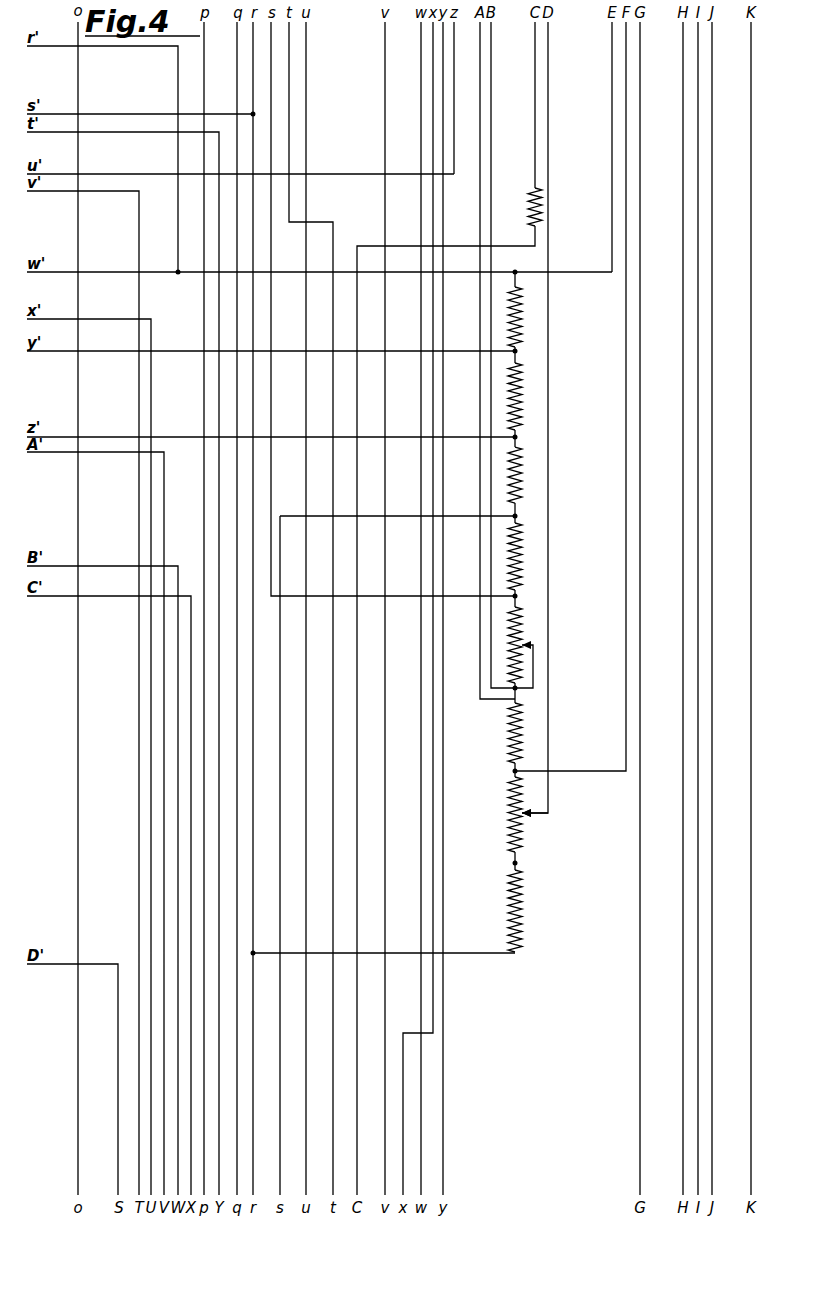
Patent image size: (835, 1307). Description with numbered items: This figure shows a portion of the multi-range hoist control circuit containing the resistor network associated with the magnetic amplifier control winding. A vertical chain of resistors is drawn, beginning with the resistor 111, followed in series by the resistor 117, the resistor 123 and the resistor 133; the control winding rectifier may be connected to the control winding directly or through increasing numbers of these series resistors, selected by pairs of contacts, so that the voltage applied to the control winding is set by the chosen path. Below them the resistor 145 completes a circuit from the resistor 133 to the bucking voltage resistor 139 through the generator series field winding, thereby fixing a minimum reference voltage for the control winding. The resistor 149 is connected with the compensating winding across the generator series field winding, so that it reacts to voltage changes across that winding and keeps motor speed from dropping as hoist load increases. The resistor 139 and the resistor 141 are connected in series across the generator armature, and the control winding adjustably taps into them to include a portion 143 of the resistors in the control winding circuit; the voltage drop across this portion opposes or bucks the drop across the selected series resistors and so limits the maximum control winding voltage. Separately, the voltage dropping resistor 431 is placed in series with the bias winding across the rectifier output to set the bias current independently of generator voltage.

The voltage dropping resistor 431 is at (529, 207).
The resistor 111 is at (519, 317).
The resistor 117 is at (520, 392).
The resistor 123 is at (520, 477).
The resistor 133 is at (520, 568).
The resistor 145 is at (520, 632).
The resistor 149 is at (520, 742).
The portion of resistors 143 is at (520, 800).
The bucking voltage resistor 139 is at (508, 813).
The resistor 141 is at (520, 917).